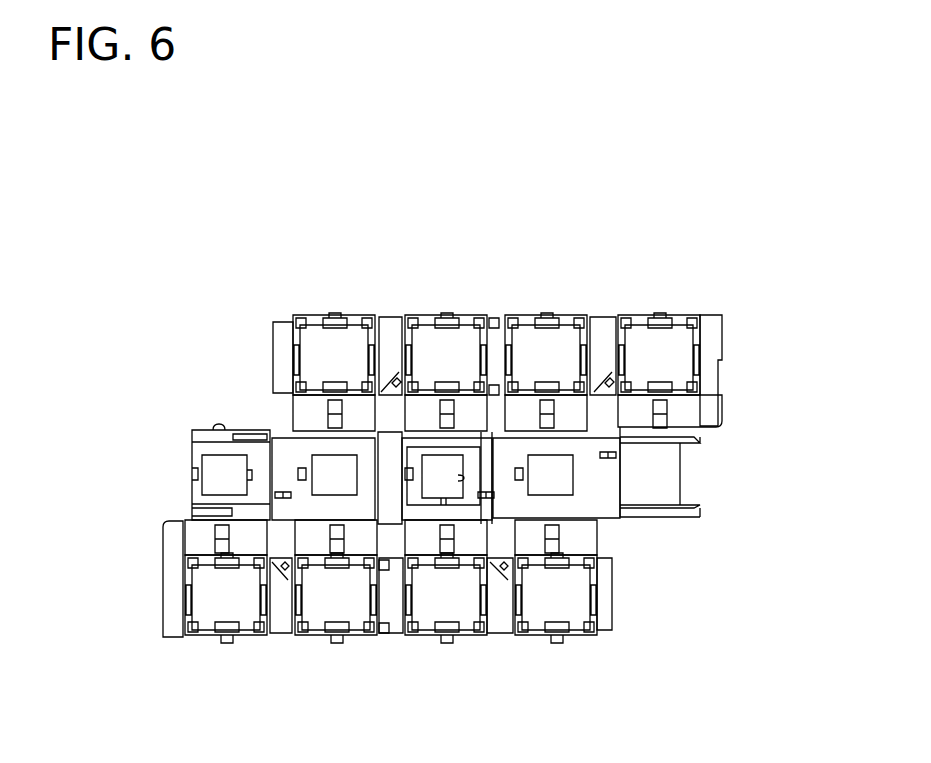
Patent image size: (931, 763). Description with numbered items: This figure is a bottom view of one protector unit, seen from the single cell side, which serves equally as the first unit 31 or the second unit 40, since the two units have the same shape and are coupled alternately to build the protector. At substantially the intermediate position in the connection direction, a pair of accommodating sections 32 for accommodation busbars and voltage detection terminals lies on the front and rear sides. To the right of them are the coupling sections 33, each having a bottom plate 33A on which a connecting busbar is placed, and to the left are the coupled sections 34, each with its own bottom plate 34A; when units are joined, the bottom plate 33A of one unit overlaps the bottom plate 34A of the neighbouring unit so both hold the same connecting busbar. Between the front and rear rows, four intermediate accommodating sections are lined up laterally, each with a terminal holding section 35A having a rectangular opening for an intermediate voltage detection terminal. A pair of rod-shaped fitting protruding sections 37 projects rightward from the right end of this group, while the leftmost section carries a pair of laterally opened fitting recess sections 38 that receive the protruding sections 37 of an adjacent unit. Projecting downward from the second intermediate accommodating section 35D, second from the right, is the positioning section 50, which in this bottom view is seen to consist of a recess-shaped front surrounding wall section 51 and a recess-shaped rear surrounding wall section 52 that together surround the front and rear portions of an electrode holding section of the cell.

The first unit 31 is at (362, 256).
The second unit 40 is at (295, 406).
The accommodating section 32 is at (500, 300).
The coupling section 33 is at (297, 303).
The bottom plate 33A is at (283, 346).
The coupled section 34 is at (703, 300).
The bottom plate 34A is at (713, 344).
The terminal holding section 35A is at (468, 481).
The second intermediate accommodating section 35D is at (400, 487).
The fitting protruding section 37 is at (700, 440).
The fitting recess section 38 is at (190, 518).
The positioning section 50 is at (462, 508).
The front surrounding wall section 51 is at (455, 442).
The rear surrounding wall section 52 is at (447, 504).